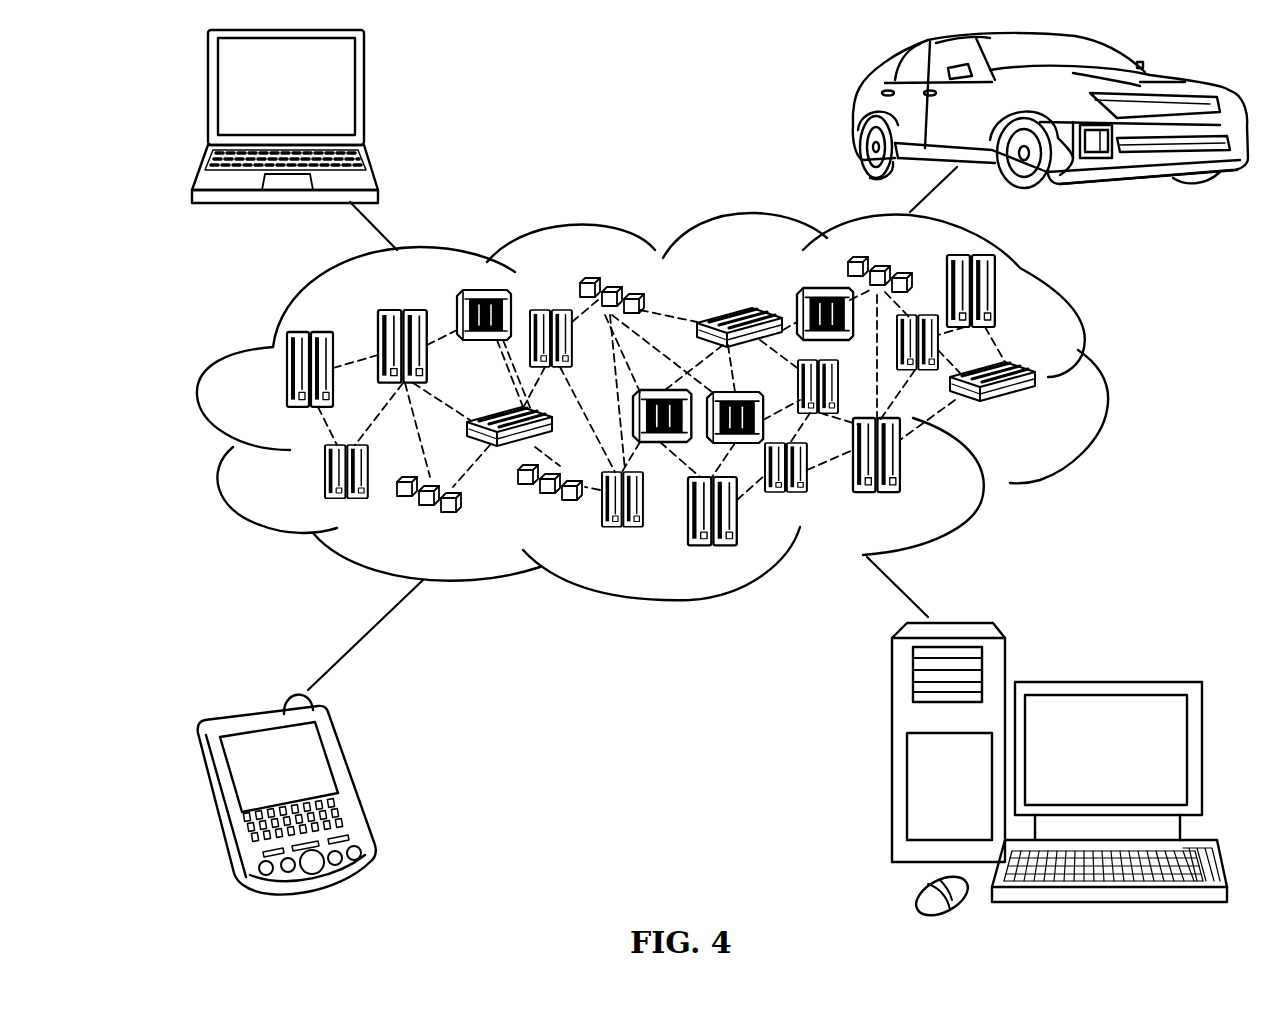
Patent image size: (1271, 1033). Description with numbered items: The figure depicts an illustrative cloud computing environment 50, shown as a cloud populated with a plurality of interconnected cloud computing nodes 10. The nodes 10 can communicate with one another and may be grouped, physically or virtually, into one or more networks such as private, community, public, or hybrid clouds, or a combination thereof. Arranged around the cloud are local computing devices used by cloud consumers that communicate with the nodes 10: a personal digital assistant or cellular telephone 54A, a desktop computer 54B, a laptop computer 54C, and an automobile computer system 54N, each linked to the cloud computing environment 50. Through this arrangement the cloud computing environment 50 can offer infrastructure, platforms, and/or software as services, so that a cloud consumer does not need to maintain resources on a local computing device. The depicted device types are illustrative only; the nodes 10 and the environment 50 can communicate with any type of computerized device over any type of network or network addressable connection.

The cloud computing nodes 10 is at (1040, 410).
The cloud computing environment 50 is at (1103, 380).
The personal digital assistant or cellular telephone 54A is at (352, 780).
The desktop computer 54B is at (1105, 682).
The laptop computer 54C is at (365, 93).
The automobile computer system 54N is at (855, 107).